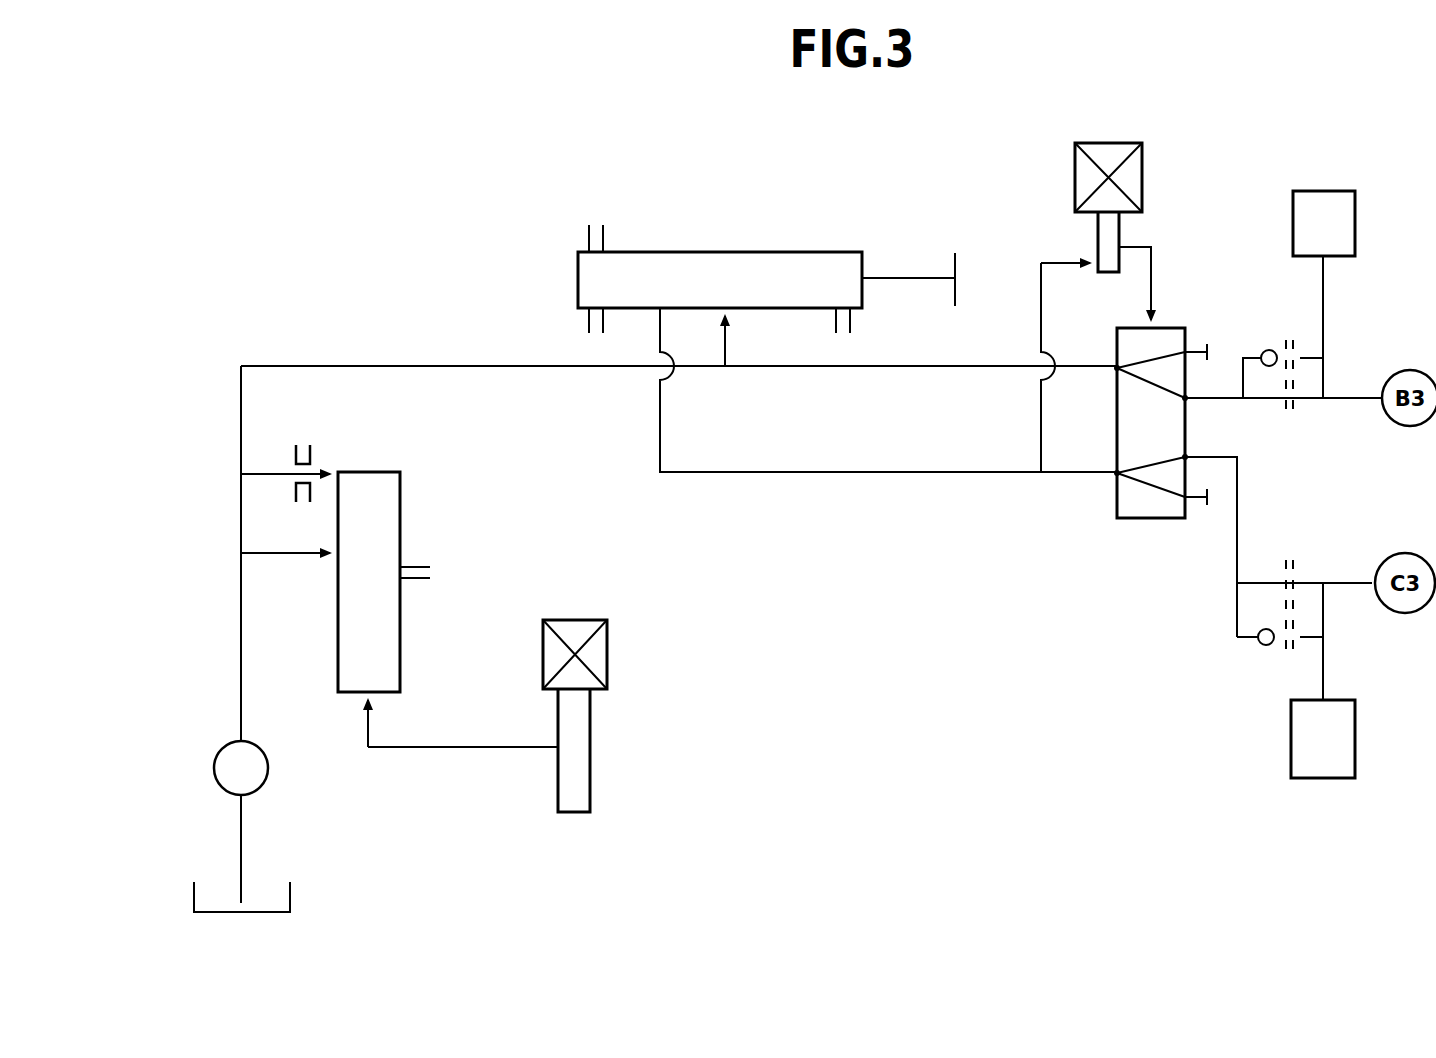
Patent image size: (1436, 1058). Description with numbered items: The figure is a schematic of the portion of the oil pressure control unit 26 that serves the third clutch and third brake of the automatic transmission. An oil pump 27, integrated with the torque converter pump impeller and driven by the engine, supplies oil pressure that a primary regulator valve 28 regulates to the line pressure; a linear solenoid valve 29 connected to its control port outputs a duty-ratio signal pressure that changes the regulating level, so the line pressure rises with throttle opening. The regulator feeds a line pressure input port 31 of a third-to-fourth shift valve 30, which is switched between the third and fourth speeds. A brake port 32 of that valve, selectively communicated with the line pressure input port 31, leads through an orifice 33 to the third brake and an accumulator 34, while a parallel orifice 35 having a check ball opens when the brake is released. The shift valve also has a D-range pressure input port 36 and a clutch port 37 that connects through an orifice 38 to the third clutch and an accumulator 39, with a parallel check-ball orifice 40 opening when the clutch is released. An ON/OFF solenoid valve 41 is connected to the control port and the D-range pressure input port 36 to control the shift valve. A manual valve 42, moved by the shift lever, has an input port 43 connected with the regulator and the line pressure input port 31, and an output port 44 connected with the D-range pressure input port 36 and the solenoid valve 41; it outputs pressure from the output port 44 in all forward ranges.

The oil pressure control unit 26 is at (447, 160).
The oil pump 27 is at (268, 772).
The primary regulator valve 28 is at (402, 539).
The linear solenoid valve 29 is at (608, 652).
The 3-4 shift valve 30 is at (1130, 530).
The line pressure input port 31 is at (1114, 366).
The brake port 32 is at (1188, 401).
The orifice 33 is at (1302, 407).
The accumulator 34 is at (1325, 191).
The orifice having a check ball 35 is at (1268, 348).
The D-range pressure input port 36 is at (1114, 476).
The clutch port 37 is at (1190, 450).
The orifice 38 is at (1298, 572).
The accumulator 39 is at (1358, 716).
The orifice having a check ball 40 is at (1277, 655).
The solenoid valve 41 is at (1142, 168).
The manual valve 42 is at (738, 252).
The input port 43 is at (735, 318).
The output port 44 is at (658, 318).